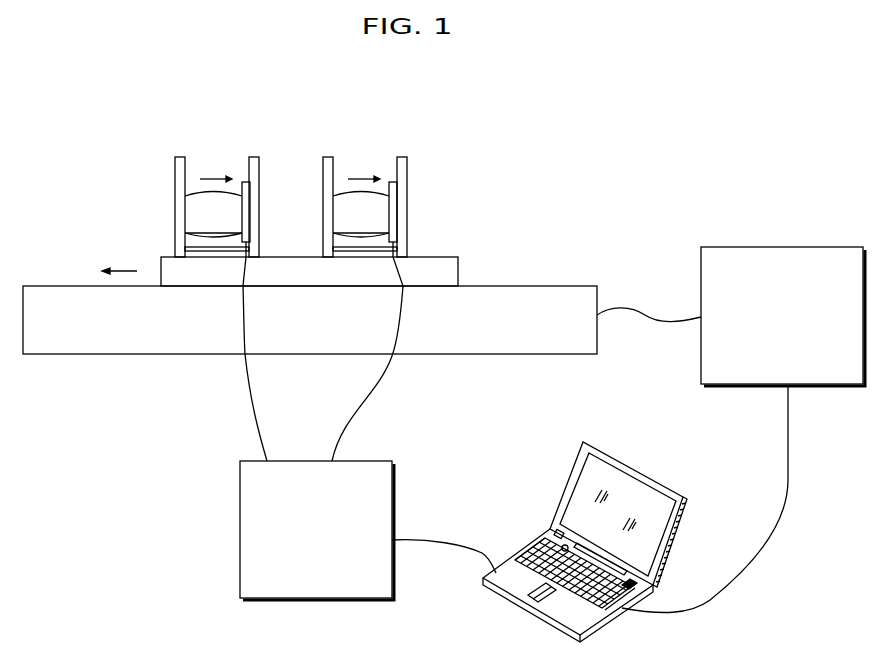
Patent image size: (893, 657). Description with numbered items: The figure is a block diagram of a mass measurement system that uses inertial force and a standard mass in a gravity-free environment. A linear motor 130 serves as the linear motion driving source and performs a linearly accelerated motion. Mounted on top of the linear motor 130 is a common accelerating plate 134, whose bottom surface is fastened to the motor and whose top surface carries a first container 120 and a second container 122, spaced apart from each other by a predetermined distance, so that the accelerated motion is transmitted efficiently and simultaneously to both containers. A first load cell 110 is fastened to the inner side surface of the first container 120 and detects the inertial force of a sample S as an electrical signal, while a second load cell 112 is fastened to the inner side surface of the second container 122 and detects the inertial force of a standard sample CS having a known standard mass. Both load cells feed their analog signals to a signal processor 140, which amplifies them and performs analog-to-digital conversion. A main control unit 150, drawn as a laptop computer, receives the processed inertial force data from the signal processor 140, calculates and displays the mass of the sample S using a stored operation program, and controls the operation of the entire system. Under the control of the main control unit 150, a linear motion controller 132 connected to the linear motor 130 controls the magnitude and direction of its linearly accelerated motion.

The first load cell 110 is at (244, 182).
The second load cell 112 is at (390, 182).
The first container 120 is at (178, 178).
The second container 122 is at (403, 176).
The linear motor 130 is at (577, 283).
The linear motion controller 132 is at (780, 247).
The common accelerating plate 134 is at (443, 256).
The signal processor 140 is at (240, 528).
The main control unit 150 is at (577, 463).